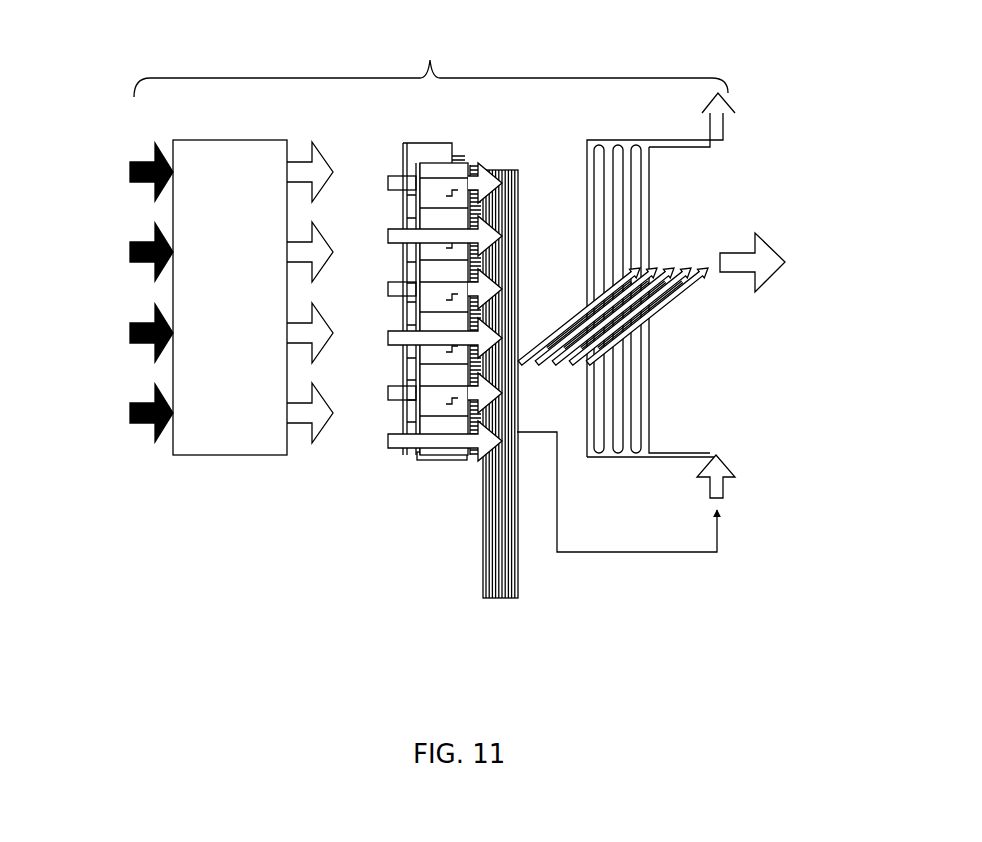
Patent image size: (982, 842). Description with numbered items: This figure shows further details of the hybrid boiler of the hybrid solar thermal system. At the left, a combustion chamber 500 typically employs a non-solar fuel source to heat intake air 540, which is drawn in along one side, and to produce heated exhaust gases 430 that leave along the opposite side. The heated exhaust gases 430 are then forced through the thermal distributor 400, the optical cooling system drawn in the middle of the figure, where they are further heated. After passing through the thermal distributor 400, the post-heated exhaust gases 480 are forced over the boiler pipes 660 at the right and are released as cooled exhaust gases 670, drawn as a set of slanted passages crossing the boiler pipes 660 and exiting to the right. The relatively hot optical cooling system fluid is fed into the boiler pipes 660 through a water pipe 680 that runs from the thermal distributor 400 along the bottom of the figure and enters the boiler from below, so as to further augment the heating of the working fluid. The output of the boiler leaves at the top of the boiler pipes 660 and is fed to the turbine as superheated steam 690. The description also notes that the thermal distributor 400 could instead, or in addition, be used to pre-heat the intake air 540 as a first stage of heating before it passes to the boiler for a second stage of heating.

The thermal distributor 400 is at (433, 499).
The combustion chamber 500 is at (230, 320).
The intake air 540 is at (129, 407).
The heated exhaust gases 430 is at (386, 336).
The post-heated exhaust gases 480 is at (511, 330).
The boiler pipes 660 is at (634, 412).
The cooled exhaust gases 670 is at (674, 261).
The water pipe 680 is at (632, 558).
The superheated steam 690 is at (705, 107).